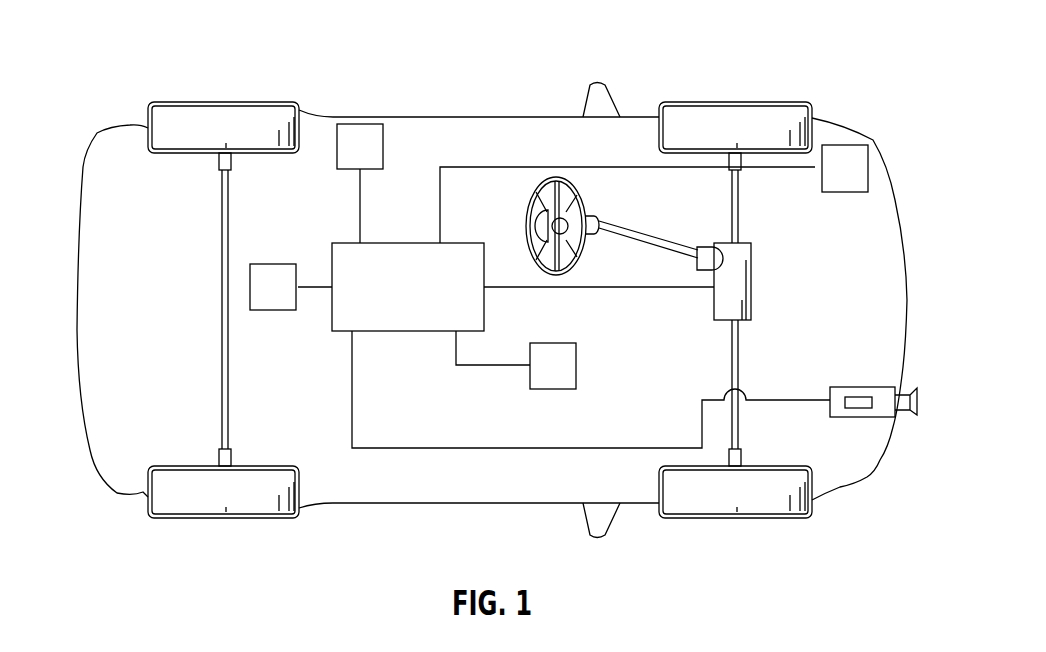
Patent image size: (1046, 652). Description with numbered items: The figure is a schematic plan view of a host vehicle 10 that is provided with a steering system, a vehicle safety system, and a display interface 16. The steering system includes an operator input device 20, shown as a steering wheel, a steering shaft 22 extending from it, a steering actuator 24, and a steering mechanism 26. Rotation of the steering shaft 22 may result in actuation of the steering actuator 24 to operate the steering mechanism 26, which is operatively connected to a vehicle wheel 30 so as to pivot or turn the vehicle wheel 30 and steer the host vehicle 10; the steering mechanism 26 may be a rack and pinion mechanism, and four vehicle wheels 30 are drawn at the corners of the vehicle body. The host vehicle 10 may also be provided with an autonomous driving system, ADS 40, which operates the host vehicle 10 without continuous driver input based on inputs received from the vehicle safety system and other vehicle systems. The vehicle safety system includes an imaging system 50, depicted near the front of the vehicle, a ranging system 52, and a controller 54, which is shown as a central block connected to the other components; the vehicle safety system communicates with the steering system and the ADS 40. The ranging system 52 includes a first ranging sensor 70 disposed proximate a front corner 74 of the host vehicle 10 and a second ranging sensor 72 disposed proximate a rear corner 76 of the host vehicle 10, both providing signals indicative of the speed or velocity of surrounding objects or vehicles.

The host vehicle 10 is at (489, 271).
The display interface 16 is at (577, 364).
The operator input device 20 is at (585, 197).
The steering shaft 22 is at (658, 240).
The steering actuator 24 is at (737, 278).
The steering mechanism 26 is at (740, 196).
The vehicle wheel 30 is at (202, 122).
The autonomous driving system (ADS) 40 is at (272, 263).
The imaging system 50 is at (861, 379).
The ranging system 52 is at (874, 197).
The controller 54 is at (390, 333).
The first ranging sensor 70 is at (890, 175).
The second ranging sensor 72 is at (360, 122).
The front corner 74 is at (841, 105).
The rear corner 76 is at (106, 113).